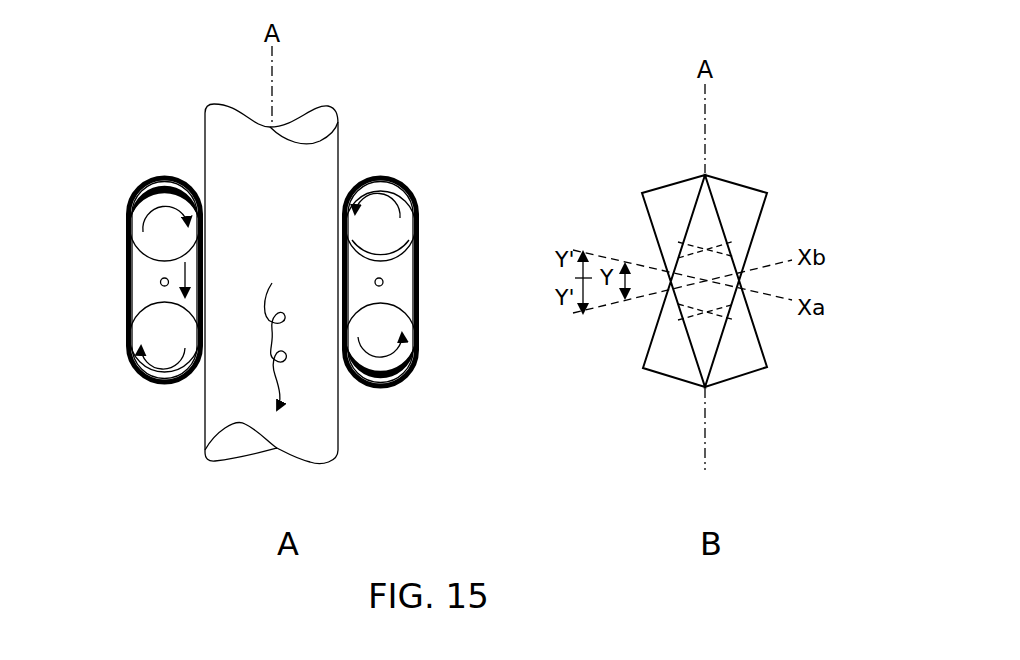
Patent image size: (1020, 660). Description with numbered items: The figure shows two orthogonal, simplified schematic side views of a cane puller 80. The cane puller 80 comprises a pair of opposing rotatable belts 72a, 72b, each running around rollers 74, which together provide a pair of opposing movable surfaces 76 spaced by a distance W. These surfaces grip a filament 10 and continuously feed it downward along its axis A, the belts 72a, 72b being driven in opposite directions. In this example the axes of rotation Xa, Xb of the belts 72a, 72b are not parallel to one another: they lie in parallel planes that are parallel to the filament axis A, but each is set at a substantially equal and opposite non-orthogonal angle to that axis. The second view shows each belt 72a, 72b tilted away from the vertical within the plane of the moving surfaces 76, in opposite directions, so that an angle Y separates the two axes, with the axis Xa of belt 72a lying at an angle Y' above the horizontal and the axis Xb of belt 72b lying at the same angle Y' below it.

In FIG. 15A, the filament 10 is at (340, 140).
In FIG. 15A, the cane puller 80 is at (138, 128).
In FIG. 15B, the cane puller 80 is at (642, 170).
In FIG. 15A, the belt 72a is at (126, 288).
In FIG. 15B, the belt 72a is at (663, 377).
In FIG. 15A, the belt 72b is at (418, 303).
In FIG. 15B, the belt 72b is at (745, 378).
In FIG. 15A, the roller 74 is at (128, 214).
In FIG. 15A, the movable surfaces 76 is at (195, 378).